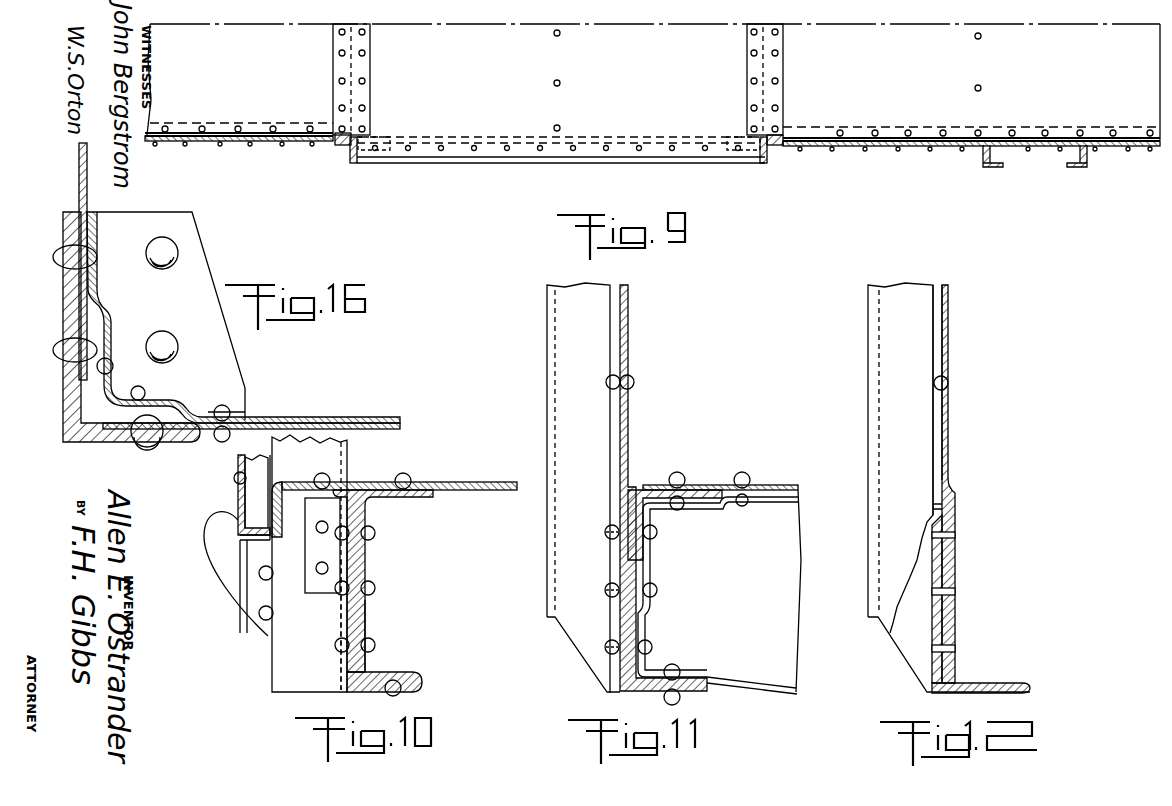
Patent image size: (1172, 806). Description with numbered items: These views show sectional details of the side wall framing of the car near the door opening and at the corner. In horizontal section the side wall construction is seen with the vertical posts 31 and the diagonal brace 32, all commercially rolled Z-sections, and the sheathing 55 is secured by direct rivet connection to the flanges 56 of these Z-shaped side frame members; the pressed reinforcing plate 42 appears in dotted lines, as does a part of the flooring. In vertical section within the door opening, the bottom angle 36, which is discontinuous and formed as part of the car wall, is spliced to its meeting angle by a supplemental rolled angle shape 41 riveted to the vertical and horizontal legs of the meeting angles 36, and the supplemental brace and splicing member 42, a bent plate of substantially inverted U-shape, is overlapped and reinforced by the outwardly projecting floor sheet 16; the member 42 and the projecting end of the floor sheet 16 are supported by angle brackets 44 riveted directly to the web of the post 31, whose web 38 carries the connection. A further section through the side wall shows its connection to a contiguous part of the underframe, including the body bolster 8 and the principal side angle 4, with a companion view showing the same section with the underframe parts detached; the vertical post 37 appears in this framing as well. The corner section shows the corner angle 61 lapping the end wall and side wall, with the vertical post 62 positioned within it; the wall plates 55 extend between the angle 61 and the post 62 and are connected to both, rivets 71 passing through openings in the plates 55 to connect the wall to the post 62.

In FIG. 10, the principal side angle 4 is at (367, 560).
In FIG. 11, the principal side angle 4 is at (641, 488).
In FIG. 11, the body bolster 8 is at (800, 613).
In FIG. 9, the floor sheet 16 is at (653, 82).
In FIG. 10, the floor sheet 16 is at (452, 482).
In FIG. 11, the floor sheet 16 is at (776, 485).
In FIG. 10, the vertical post 31 is at (347, 460).
In FIG. 11, the vertical post 31 is at (547, 418).
In FIG. 12, the vertical post 31 is at (870, 455).
In FIG. 9, the diagonal brace 32 is at (991, 166).
In FIG. 10, the bottom angle 36 is at (377, 693).
In FIG. 11, the bottom angle 36 is at (620, 623).
In FIG. 12, the bottom angle 36 is at (956, 585).
In FIG. 9, the post 37 is at (710, 105).
In FIG. 10, the web of angle 38 is at (345, 624).
In FIG. 10, the supplemental rolled angle shape 41 is at (367, 640).
In FIG. 9, the supplemental brace and splicing member 42 is at (575, 160).
In FIG. 10, the supplemental brace and splicing member 42 is at (284, 487).
In FIG. 9, the angle bracket 44 is at (386, 137).
In FIG. 10, the angle bracket 44 is at (308, 550).
In FIG. 9, the sheathing 55 is at (220, 141).
In FIG. 16, the sheathing 55 is at (79, 178).
In FIG. 12, the sheathing 55 is at (946, 371).
In FIG. 9, the flange 56 is at (336, 145).
In FIG. 12, the flange 56 is at (936, 419).
In FIG. 16, the corner angle 61 is at (63, 403).
In FIG. 16, the vertical post 62 is at (111, 328).
In FIG. 16, the rivet 71 is at (222, 442).